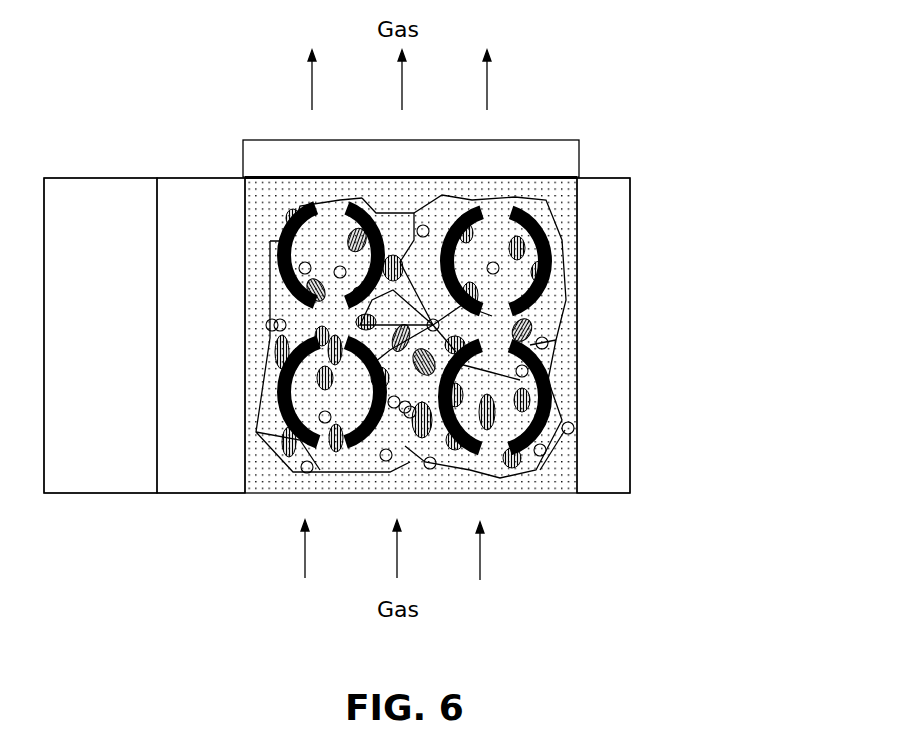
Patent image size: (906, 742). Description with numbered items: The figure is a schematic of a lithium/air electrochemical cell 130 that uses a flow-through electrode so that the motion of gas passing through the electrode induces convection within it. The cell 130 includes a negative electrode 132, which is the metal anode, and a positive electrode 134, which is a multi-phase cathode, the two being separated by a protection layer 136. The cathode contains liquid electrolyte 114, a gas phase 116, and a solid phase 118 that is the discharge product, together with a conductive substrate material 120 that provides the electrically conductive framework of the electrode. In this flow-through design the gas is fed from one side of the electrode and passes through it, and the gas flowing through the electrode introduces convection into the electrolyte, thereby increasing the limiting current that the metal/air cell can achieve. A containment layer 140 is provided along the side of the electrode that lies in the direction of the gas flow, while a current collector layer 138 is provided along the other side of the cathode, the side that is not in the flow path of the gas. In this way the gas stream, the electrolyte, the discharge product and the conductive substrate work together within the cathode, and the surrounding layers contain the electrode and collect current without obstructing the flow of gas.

The electrochemical cell 130 is at (630, 104).
The negative electrode 132 is at (68, 175).
The protection layer 136 is at (185, 175).
The current collector layer 138 is at (630, 435).
The containment layer 140 is at (579, 157).
The liquid electrolyte 114 is at (263, 482).
The positive electrode 134 is at (243, 449).
The gas phase 116 is at (417, 473).
The solid phase 118 is at (533, 470).
The conductive substrate material 120 is at (390, 210).